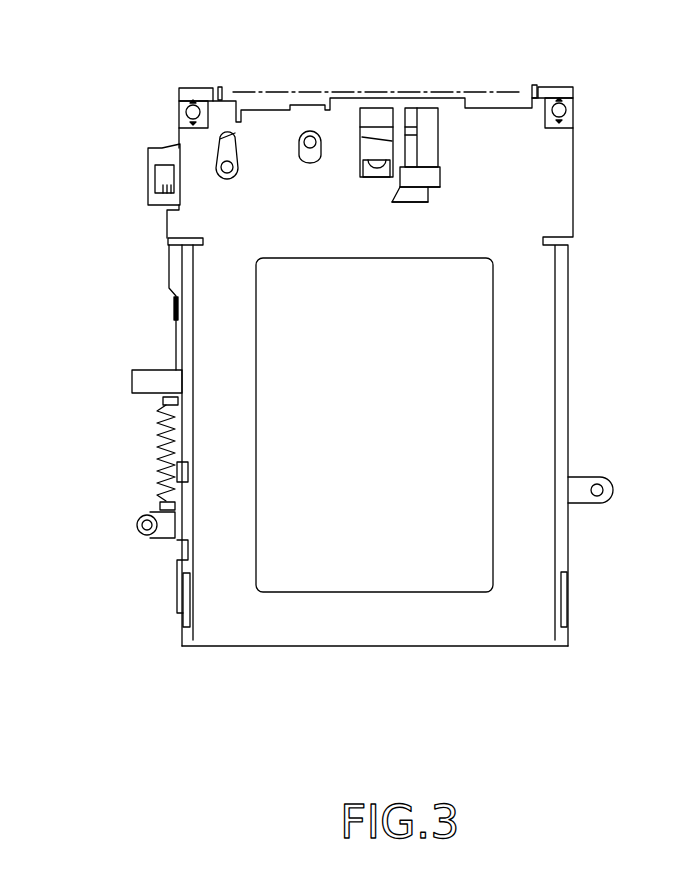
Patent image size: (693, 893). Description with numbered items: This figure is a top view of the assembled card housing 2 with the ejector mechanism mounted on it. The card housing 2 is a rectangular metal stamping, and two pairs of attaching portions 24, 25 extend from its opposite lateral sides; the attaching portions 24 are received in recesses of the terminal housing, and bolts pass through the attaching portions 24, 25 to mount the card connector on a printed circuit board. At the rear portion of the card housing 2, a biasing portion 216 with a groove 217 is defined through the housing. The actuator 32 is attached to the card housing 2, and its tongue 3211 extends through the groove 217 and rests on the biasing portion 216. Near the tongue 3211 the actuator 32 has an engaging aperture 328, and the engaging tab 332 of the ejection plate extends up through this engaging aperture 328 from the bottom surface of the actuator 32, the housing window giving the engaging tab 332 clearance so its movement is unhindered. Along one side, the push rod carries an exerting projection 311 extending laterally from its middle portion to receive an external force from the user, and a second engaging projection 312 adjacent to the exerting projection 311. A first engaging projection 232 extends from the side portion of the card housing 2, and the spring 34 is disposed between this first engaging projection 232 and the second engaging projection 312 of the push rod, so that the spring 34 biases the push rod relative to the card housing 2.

The card housing 2 is at (577, 167).
The attaching portions 24 is at (183, 92).
The attaching portions 25 is at (167, 530).
The actuator 32 is at (365, 135).
The engaging aperture 328 is at (365, 162).
The engaging tab 332 is at (378, 173).
The tongue 3211 is at (417, 170).
The biasing portion 216 is at (428, 197).
The groove 217 is at (397, 202).
The exerting projection 311 is at (145, 377).
The second engaging projection 312 is at (168, 405).
The spring 34 is at (162, 465).
The first engaging projection 232 is at (147, 525).